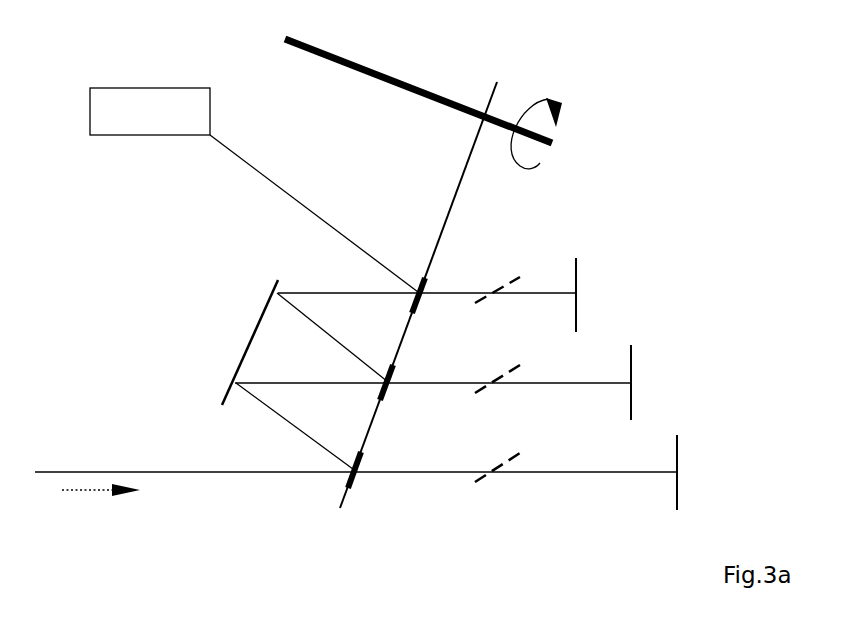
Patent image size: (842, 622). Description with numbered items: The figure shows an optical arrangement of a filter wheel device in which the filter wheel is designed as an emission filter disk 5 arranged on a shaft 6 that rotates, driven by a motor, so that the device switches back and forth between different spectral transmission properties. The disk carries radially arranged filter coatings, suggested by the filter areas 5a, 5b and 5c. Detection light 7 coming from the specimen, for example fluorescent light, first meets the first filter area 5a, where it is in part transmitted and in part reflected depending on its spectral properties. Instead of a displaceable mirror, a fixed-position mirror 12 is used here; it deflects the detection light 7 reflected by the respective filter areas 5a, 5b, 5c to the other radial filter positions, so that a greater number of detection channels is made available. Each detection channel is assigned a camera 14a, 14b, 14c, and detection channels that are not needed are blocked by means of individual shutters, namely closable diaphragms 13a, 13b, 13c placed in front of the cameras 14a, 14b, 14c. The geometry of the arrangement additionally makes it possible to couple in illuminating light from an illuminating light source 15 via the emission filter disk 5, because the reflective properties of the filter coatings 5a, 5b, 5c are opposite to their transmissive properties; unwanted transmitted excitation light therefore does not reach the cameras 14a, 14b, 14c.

The emission filter disk 5 is at (490, 96).
The first filter area 5a is at (340, 490).
The second filter area 5b is at (387, 393).
The third filter area 5c is at (427, 278).
The shaft 6 is at (284, 44).
The detection light 7 is at (197, 473).
The fixed-position mirror 12 is at (227, 400).
The closable diaphragm 13a is at (478, 478).
The closable diaphragm 13b is at (517, 368).
The closable diaphragm 13c is at (518, 275).
The camera 14a is at (678, 465).
The camera 14b is at (632, 370).
The camera 14c is at (577, 282).
The illuminating light source 15 is at (150, 111).